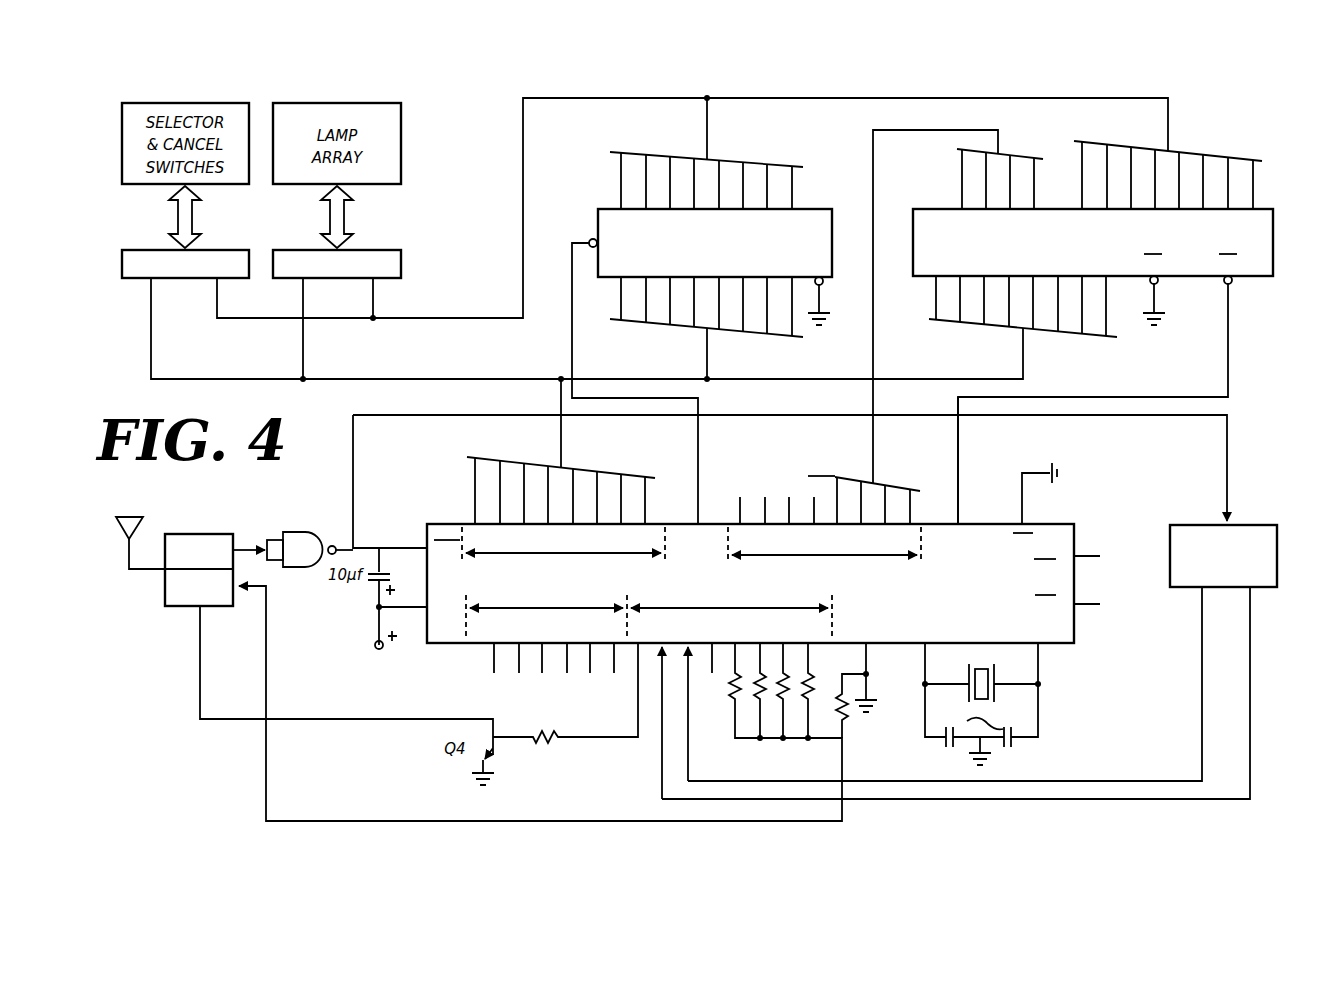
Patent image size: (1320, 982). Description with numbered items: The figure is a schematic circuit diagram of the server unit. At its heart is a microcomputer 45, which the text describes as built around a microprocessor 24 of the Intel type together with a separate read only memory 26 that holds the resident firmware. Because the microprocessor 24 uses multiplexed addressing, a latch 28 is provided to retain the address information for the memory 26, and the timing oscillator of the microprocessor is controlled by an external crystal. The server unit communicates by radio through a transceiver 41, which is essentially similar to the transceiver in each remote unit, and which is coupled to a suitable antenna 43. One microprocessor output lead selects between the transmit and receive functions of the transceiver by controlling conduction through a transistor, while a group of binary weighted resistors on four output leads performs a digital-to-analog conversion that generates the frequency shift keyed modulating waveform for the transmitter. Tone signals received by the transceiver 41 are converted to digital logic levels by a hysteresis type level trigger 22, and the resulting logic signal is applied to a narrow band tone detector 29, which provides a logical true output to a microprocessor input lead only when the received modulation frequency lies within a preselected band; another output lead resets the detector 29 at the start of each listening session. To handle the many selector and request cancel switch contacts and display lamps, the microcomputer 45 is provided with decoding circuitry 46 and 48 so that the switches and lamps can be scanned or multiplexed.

The hysteresis type level trigger 22 is at (296, 533).
The microprocessor 24 is at (438, 524).
The read only memory 26 is at (1273, 252).
The latch 28 is at (832, 246).
The tone detector 29 is at (1242, 525).
The transceiver 41 is at (196, 534).
The antenna 43 is at (125, 517).
The microcomputer 45 is at (741, 457).
The decoding circuitry 46 is at (212, 250).
The decoding circuitry 48 is at (365, 250).